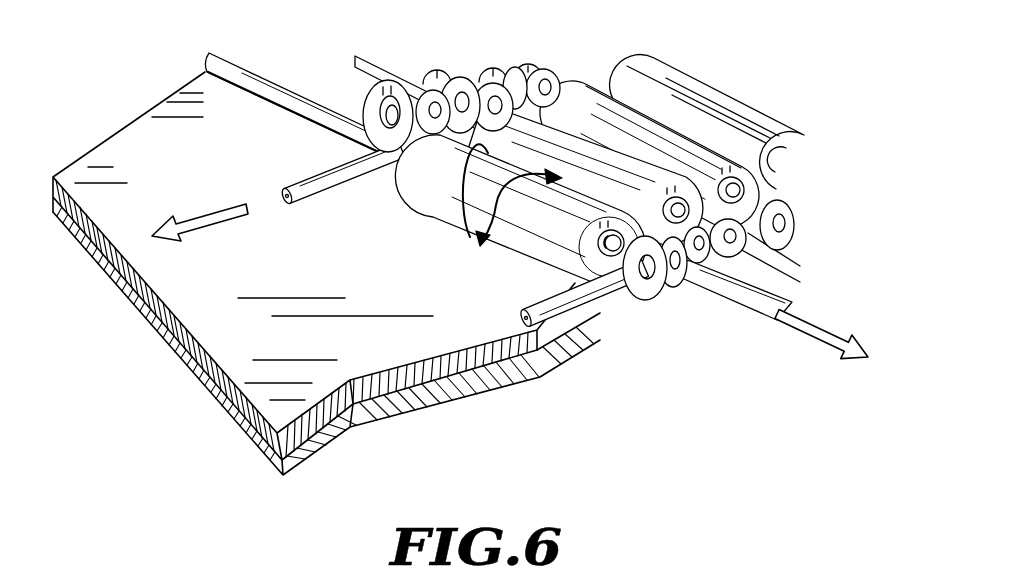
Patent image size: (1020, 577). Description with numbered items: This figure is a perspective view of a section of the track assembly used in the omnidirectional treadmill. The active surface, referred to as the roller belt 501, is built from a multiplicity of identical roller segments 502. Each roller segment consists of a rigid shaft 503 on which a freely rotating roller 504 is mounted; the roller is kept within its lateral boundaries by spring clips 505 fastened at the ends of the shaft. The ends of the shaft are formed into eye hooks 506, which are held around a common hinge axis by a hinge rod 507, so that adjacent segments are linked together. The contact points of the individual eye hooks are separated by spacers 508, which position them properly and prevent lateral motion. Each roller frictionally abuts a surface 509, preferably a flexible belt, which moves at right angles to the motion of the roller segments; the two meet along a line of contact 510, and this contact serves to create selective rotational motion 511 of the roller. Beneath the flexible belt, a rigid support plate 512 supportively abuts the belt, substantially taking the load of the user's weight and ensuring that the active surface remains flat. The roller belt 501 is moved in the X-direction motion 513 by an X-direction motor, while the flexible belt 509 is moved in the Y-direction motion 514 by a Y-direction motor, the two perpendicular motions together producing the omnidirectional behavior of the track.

The active surface (roller belt) 501 is at (587, 113).
The roller segment 502 is at (355, 112).
The rigid shaft 503 is at (615, 258).
The freely rotating roller 504 is at (435, 183).
The spring clip 505 is at (407, 110).
The eye hook 506 is at (658, 292).
The hinge rod 507 is at (323, 183).
The spacer 508 is at (677, 270).
The surface (flexible belt) 509 is at (230, 343).
The line of contact 510 is at (493, 246).
The rotational motion 511 is at (463, 210).
The rigid support plate 512 is at (323, 450).
The X-direction motion 513 is at (817, 327).
The Y-direction motion 514 is at (197, 227).